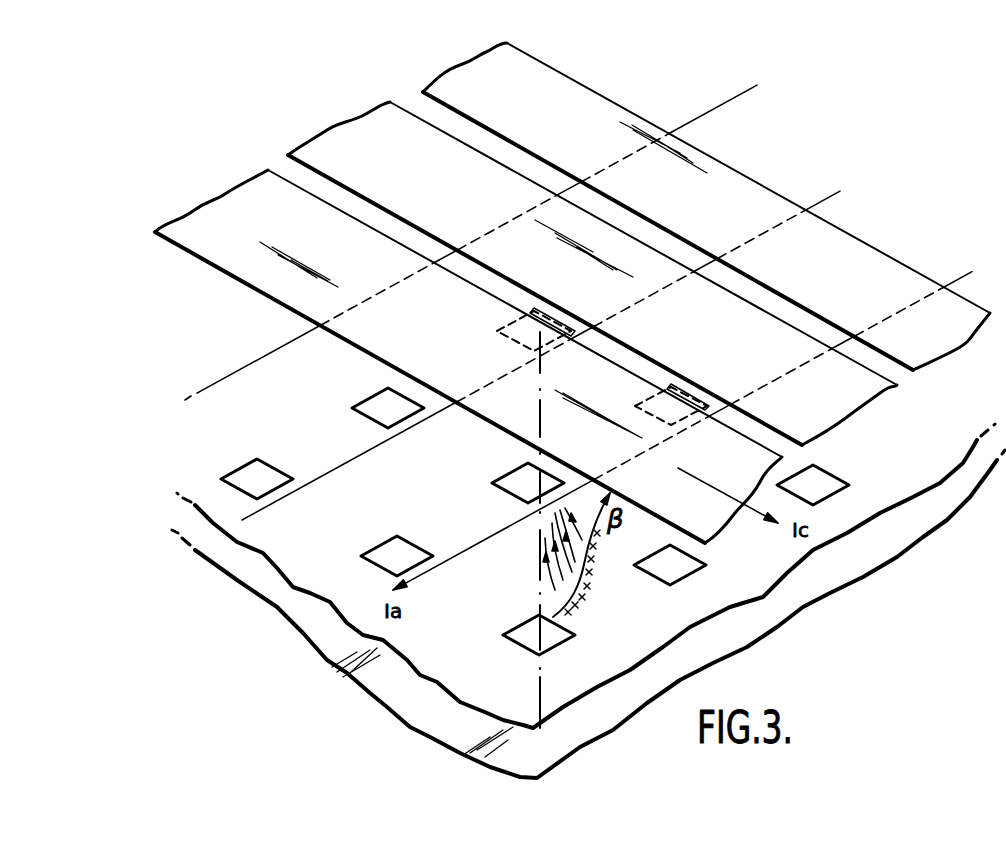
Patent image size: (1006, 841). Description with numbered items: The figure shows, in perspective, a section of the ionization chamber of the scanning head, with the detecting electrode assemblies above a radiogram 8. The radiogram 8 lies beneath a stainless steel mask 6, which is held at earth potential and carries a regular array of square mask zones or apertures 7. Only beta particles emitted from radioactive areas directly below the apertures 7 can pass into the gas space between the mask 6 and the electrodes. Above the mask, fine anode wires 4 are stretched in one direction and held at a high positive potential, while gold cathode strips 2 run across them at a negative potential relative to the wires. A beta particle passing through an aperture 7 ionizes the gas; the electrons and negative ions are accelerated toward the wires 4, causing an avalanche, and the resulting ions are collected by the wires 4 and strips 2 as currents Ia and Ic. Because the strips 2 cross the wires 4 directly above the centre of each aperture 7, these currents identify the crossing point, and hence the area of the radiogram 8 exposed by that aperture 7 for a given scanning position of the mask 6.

The gold strips 2 is at (225, 211).
The fine wires 4 is at (257, 362).
The mask 6 is at (892, 492).
The apertures 7 is at (245, 475).
The radiogram 8 is at (740, 630).